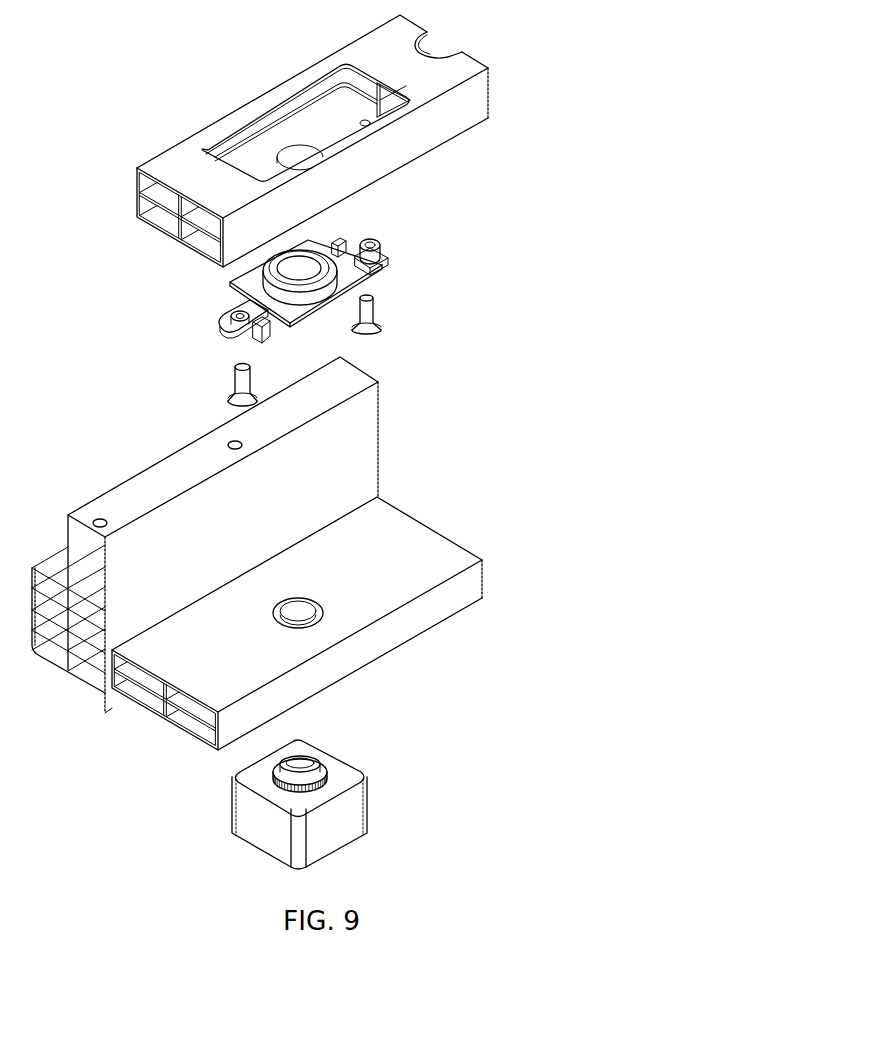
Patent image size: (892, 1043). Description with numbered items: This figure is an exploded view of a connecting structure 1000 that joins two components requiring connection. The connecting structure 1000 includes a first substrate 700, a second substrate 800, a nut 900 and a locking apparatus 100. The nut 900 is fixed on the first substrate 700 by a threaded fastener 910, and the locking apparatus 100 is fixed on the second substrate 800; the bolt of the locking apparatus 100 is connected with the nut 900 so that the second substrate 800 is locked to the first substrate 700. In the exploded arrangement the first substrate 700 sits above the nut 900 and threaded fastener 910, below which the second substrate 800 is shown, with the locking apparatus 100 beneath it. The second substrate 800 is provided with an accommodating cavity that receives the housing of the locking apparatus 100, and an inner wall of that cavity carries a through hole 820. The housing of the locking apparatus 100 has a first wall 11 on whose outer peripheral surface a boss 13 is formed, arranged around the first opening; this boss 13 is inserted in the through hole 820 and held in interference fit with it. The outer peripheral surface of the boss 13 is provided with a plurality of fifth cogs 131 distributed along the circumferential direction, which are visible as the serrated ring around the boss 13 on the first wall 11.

The connecting structure 1000 is at (287, 24).
The first substrate 700 is at (422, 133).
The nut 900 is at (412, 252).
The threaded fastener 910 is at (373, 310).
The second substrate 800 is at (458, 518).
The through hole 820 is at (347, 624).
The locking apparatus 100 is at (325, 780).
The first wall 11 is at (347, 773).
The boss 13 is at (273, 770).
The fifth cogs 131 is at (277, 780).